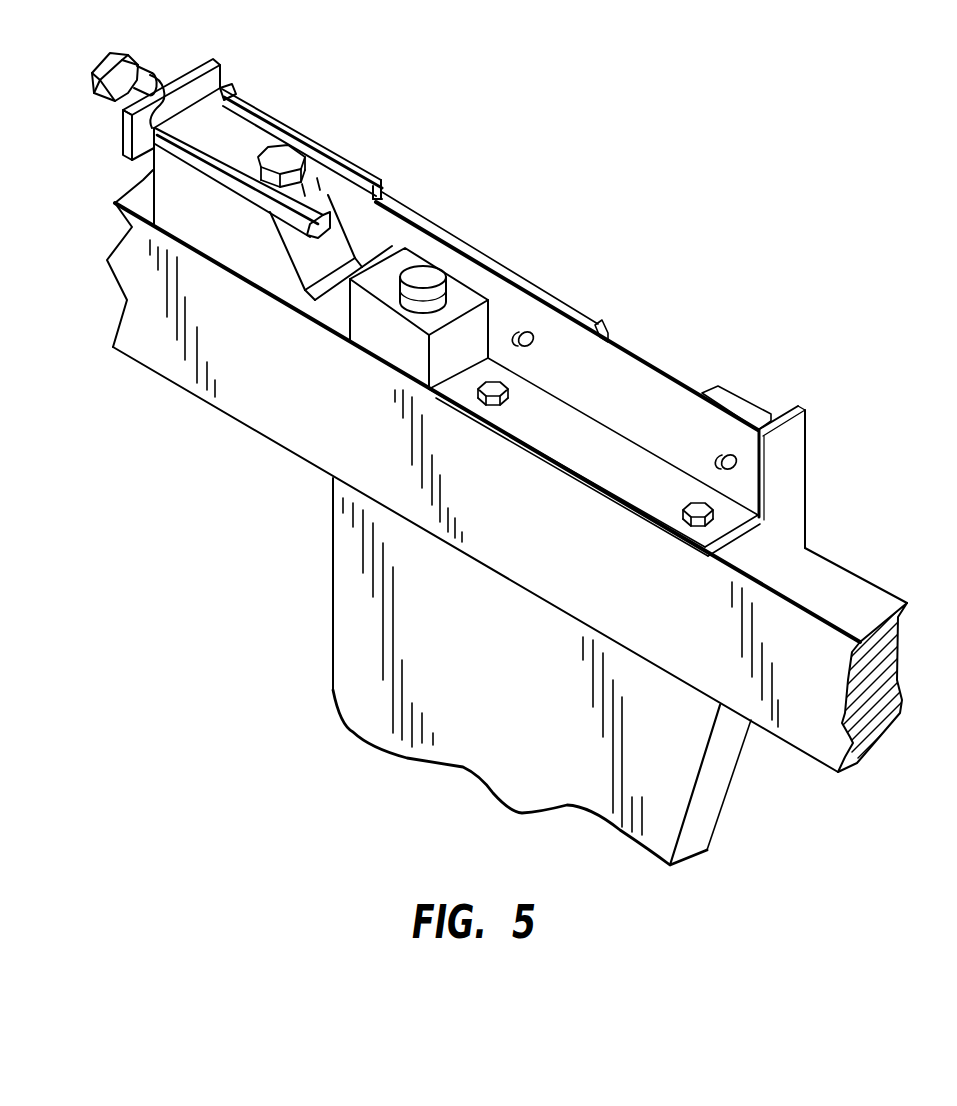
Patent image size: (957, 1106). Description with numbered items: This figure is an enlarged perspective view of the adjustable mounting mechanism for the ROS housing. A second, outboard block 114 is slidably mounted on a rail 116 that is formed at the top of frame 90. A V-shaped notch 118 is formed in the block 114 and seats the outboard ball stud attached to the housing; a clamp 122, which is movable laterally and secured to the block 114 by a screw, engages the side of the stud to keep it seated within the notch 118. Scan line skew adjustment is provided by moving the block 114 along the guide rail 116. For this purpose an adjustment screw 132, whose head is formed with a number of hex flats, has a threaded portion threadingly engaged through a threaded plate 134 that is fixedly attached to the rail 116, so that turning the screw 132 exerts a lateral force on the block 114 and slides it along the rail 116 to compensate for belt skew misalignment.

The frame 90 is at (783, 408).
The outboard block 114 is at (463, 297).
The rail 116 is at (174, 360).
The V-shaped notch 118 is at (358, 262).
The clamp 122 is at (312, 134).
The adjustment screw 132 is at (102, 58).
The threaded plate 134 is at (196, 63).